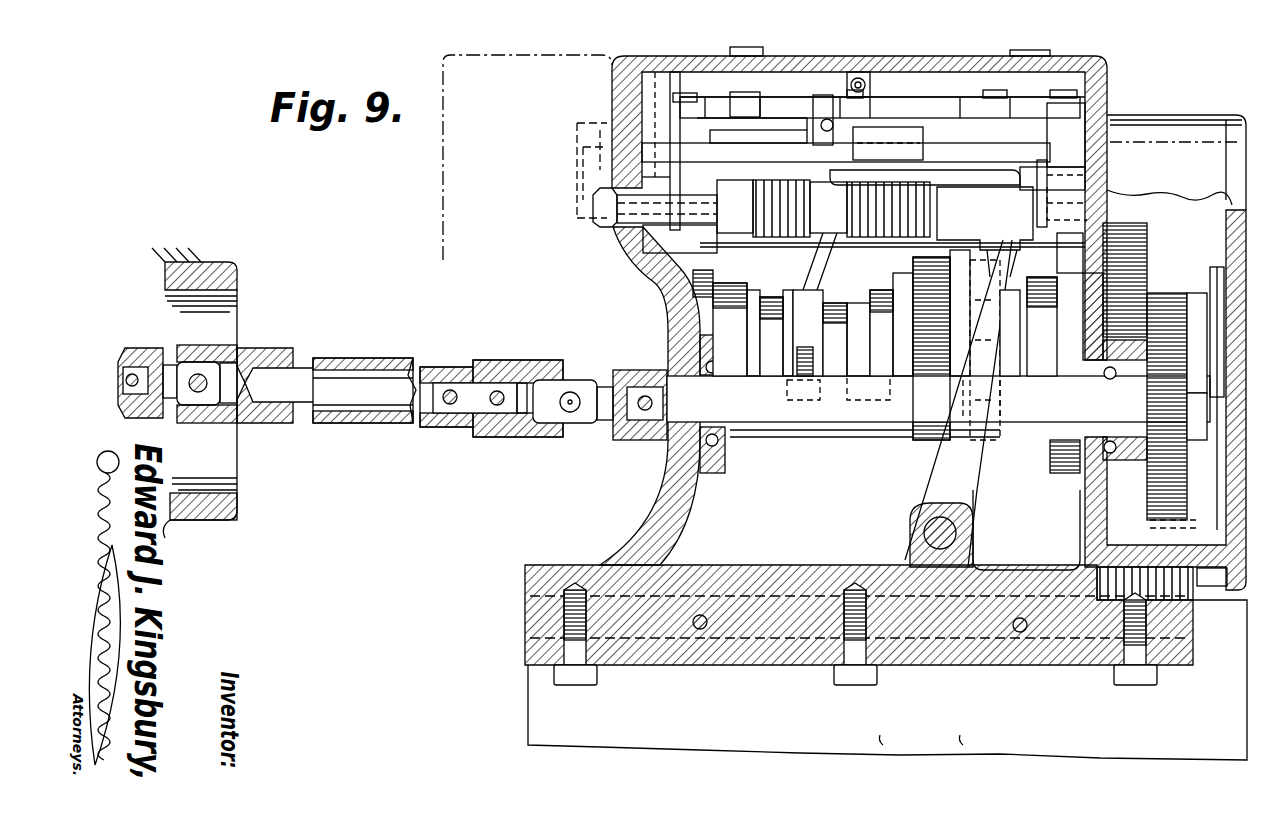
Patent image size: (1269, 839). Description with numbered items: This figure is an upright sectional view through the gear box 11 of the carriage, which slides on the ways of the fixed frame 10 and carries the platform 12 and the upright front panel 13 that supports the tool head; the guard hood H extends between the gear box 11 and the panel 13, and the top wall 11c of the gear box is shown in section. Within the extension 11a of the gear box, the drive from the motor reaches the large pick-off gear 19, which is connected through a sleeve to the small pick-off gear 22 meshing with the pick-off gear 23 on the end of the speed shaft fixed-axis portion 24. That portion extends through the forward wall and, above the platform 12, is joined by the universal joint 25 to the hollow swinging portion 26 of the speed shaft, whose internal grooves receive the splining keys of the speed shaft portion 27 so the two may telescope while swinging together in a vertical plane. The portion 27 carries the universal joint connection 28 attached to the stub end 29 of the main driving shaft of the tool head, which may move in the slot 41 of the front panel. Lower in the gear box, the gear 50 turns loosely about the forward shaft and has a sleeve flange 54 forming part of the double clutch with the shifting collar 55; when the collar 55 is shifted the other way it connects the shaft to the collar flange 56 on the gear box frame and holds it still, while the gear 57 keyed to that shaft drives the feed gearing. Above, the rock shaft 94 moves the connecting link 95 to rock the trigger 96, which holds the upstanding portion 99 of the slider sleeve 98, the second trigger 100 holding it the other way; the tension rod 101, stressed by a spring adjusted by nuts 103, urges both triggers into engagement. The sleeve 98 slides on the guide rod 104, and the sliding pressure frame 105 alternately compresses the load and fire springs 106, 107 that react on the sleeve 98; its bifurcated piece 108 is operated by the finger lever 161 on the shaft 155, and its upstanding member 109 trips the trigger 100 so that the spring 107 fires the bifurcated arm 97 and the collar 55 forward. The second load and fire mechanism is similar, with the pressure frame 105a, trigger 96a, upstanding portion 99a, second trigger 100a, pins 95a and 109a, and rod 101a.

The guard hood H is at (508, 60).
The fixed frame 10 is at (560, 717).
The gear box 11 is at (1097, 90).
The extension of the gear box 11a is at (1163, 132).
The casing top wall 11c is at (919, 60).
The platform 12 is at (533, 585).
The upright front panel 13 is at (207, 282).
The large pick-off gear 19 is at (1130, 263).
The small pick-off gear 22 is at (1160, 297).
The pick-off gear 23 is at (1163, 333).
The speed shaft fixed-axis portion 24 is at (1013, 413).
The universal joint 25 is at (547, 380).
The hollow swinging portion of the speed shaft 26 is at (420, 367).
The speed shaft portion 27 is at (360, 370).
The universal joint connection 28 is at (233, 363).
The stub end of the main driving shaft 29 is at (143, 370).
The slot 41 is at (220, 330).
The gear 50 is at (923, 447).
The sleeve flange 54 is at (877, 297).
The shifting collar 55 is at (808, 257).
The collar flange 56 is at (720, 300).
The gear 57 is at (985, 440).
The rock shaft 94 is at (905, 162).
The connecting link 95 is at (895, 142).
The pin 95a is at (742, 98).
The trigger 96 is at (728, 152).
The trigger 96a is at (717, 112).
The bifurcated arm 97 is at (813, 310).
The slider sleeve 98 is at (866, 236).
The upstanding portion 99 is at (813, 125).
The upstanding portion 99a is at (850, 75).
The second trigger 100 is at (953, 150).
The second trigger 100a is at (943, 113).
The tension rod 101 is at (823, 120).
The rod 101a is at (870, 90).
The nuts 103 is at (852, 150).
The guide rod 104 is at (1090, 201).
The sliding pressure frame 105 is at (943, 170).
The pressure frame 105a is at (768, 120).
The load and fire spring 106 is at (985, 237).
The load and fire spring 107 is at (767, 203).
The bifurcated piece 108 is at (1030, 233).
The upstanding member 109 is at (1007, 137).
The pin 109a is at (990, 105).
The shaft 155 is at (955, 540).
The finger lever 161 is at (957, 473).